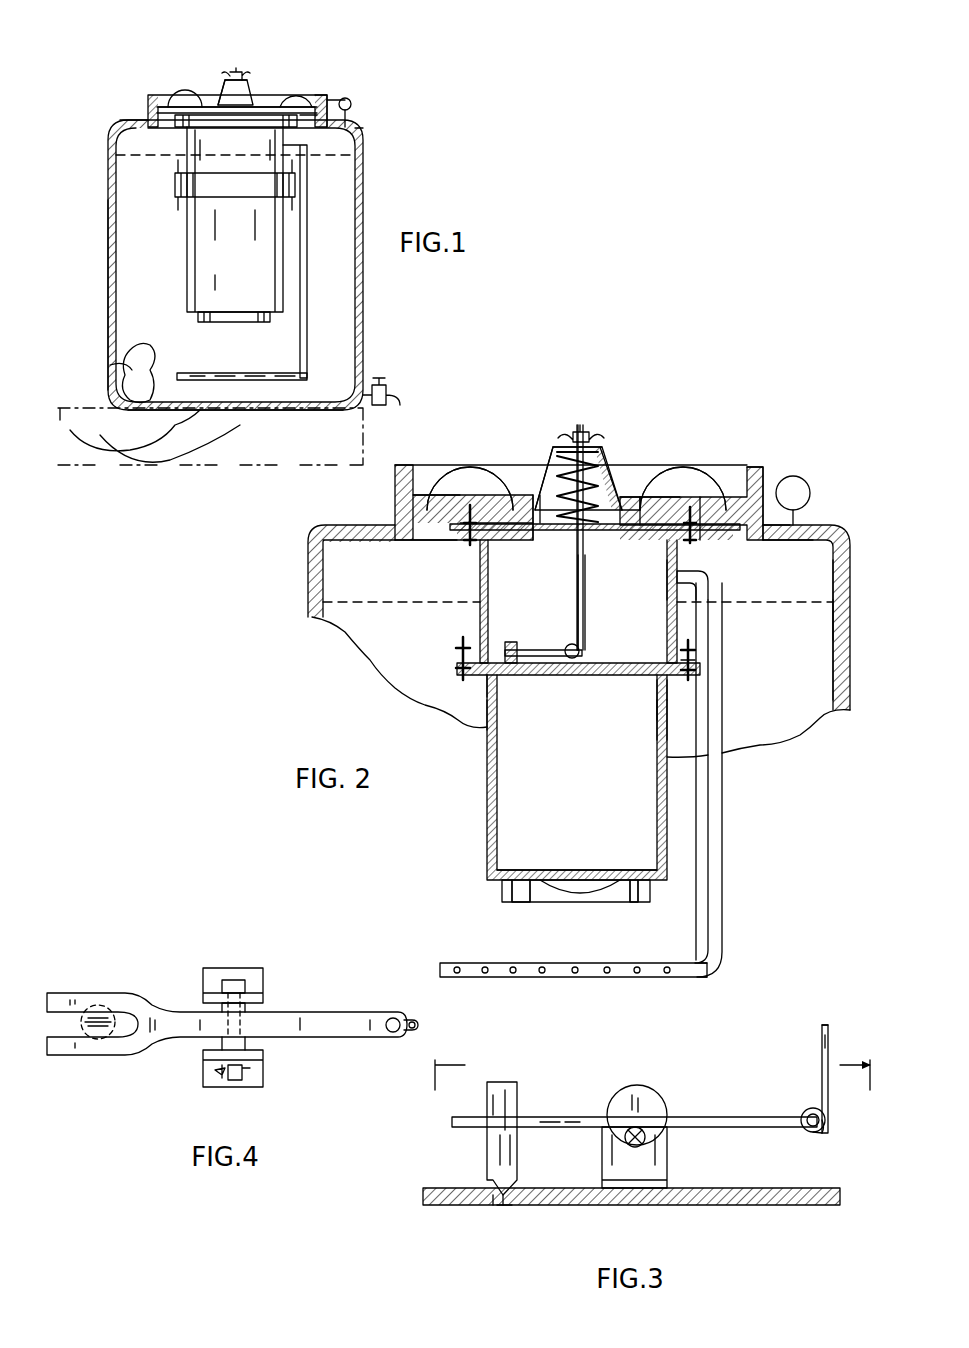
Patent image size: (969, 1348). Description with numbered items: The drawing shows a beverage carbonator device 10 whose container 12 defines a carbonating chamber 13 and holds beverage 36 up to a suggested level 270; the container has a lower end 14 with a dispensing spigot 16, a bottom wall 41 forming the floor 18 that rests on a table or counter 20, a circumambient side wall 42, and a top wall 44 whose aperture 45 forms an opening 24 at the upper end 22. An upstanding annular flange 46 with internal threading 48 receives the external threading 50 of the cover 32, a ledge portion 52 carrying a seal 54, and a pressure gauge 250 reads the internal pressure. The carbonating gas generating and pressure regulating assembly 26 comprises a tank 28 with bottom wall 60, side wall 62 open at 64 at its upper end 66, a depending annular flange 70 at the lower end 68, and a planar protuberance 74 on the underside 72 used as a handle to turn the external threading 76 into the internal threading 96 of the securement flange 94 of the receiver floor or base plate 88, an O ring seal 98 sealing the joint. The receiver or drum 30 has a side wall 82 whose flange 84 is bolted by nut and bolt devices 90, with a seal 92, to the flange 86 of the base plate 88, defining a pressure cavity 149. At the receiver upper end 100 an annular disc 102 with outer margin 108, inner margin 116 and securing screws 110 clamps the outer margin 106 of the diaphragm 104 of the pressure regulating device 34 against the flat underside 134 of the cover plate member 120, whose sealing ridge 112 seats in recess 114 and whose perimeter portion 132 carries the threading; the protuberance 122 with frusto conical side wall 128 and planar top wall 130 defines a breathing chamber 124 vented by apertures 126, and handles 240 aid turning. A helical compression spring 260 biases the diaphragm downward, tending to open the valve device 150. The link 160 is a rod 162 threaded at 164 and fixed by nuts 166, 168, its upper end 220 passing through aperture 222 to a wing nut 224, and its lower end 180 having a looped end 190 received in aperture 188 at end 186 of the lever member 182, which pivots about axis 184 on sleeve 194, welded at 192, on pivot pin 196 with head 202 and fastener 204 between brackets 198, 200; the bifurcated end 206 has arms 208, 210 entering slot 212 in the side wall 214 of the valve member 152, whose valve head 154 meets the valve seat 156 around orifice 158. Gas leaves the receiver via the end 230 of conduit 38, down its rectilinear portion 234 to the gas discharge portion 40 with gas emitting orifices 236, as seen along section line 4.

In FIG. 1, the beverage carbonator device 10 is at (397, 118).
In FIG. 1, the container 12 is at (368, 297).
In FIG. 2, the carbonating chamber 13 is at (832, 654).
In FIG. 1, the lower end 14 is at (135, 408).
In FIG. 1, the dispensing off-on control valve or spigot 16 is at (395, 385).
In FIG. 1, the flat bottom portion or floor 18 is at (215, 410).
In FIG. 1, the table or counter 20 is at (105, 408).
In FIG. 2, the upper end 22 is at (820, 545).
In FIG. 1, the opening 24 is at (168, 152).
In FIG. 2, the opening 24 is at (445, 552).
In FIG. 1, the carbonating gas generating and pressure regulating assembly 26 is at (170, 252).
In FIG. 2, the carbonating gas generating and pressure regulating assembly 26 is at (670, 468).
In FIG. 1, the receptacle or tank 28 is at (232, 300).
In FIG. 2, the receptacle or tank 28 is at (485, 830).
In FIG. 1, the carbonating gas receiver or drum 30 is at (262, 163).
In FIG. 2, the carbonating gas receiver or drum 30 is at (455, 640).
In FIG. 1, the container cover 32 is at (288, 82).
In FIG. 2, the container cover 32 is at (743, 494).
In FIG. 2, the pressure regulating device 34 is at (668, 456).
In FIG. 2, the beverage 36 is at (840, 608).
In FIG. 1, the conduit 38 is at (307, 240).
In FIG. 2, the conduit 38 is at (678, 690).
In FIG. 1, the gas discharge portion 40 is at (252, 382).
In FIG. 2, the gas discharge portion 40 is at (616, 978).
In FIG. 1, the bottom wall 41 is at (195, 410).
In FIG. 1, the side wall 42 is at (108, 240).
In FIG. 1, the top wall 44 is at (135, 118).
In FIG. 2, the aperture 45 is at (432, 540).
In FIG. 1, the annular flange 46 is at (332, 110).
In FIG. 2, the annular flange 46 is at (765, 500).
In FIG. 1, the internal threading 48 is at (322, 96).
In FIG. 2, the internal threading 48 is at (762, 480).
In FIG. 1, the external threading 50 is at (195, 95).
In FIG. 2, the external threading 50 is at (395, 510).
In FIG. 1, the ledge portion 52 is at (320, 128).
In FIG. 2, the ledge portion 52 is at (730, 540).
In FIG. 2, the seal 54 is at (790, 526).
In FIG. 2, the bottom wall 60 is at (630, 903).
In FIG. 2, the side wall 62 is at (487, 790).
In FIG. 2, the open end 64 is at (487, 745).
In FIG. 2, the upper end 66 is at (485, 705).
In FIG. 2, the lower end 68 is at (667, 862).
In FIG. 1, the annular flange 70 is at (272, 318).
In FIG. 2, the annular flange 70 is at (502, 892).
In FIG. 2, the underside 72 is at (522, 903).
In FIG. 2, the planar protuberance 74 is at (577, 895).
In FIG. 2, the external threading 76 is at (668, 715).
In FIG. 2, the side wall 82 is at (462, 614).
In FIG. 2, the flange 84 is at (457, 670).
In FIG. 2, the flange 86 is at (470, 662).
In FIG. 2, the receiver floor or base plate 88 is at (610, 672).
In FIG. 3, the receiver floor or base plate 88 is at (765, 1206).
In FIG. 2, the nut and bolt devices 90 is at (455, 645).
In FIG. 2, the seal 92 is at (700, 668).
In FIG. 2, the securement flange 94 is at (480, 672).
In FIG. 2, the internal threading 96 is at (668, 680).
In FIG. 2, the O ring seal 98 is at (655, 680).
In FIG. 2, the upper end 100 is at (488, 578).
In FIG. 2, the annular disc 102 is at (662, 545).
In FIG. 2, the diaphragm 104 is at (630, 530).
In FIG. 2, the outer margin 106 is at (703, 494).
In FIG. 2, the outer margin 108 is at (442, 494).
In FIG. 2, the securing bolts or screws 110 is at (527, 494).
In FIG. 2, the annular sealing ridge 112 is at (537, 500).
In FIG. 2, the annular recess 114 is at (705, 494).
In FIG. 2, the inner margin 116 is at (490, 540).
In FIG. 2, the plate member 120 is at (470, 495).
In FIG. 1, the protuberance 122 is at (254, 92).
In FIG. 2, the protuberance 122 is at (622, 480).
In FIG. 2, the breathing chamber 124 is at (660, 494).
In FIG. 2, the apertures 126 is at (548, 480).
In FIG. 1, the side wall 128 is at (220, 100).
In FIG. 2, the side wall 128 is at (630, 490).
In FIG. 2, the top wall 130 is at (608, 470).
In FIG. 2, the perimeter portion 132 is at (415, 465).
In FIG. 2, the underside 134 is at (715, 540).
In FIG. 2, the pressure cavity 149 is at (480, 598).
In FIG. 2, the valve device 150 is at (580, 682).
In FIG. 2, the valve member 152 is at (511, 642).
In FIG. 3, the valve member 152 is at (510, 1095).
In FIG. 3, the valve head 154 is at (497, 1205).
In FIG. 3, the valve seat 156 is at (510, 1205).
In FIG. 3, the orifice 158 is at (505, 1206).
In FIG. 2, the link 160 is at (592, 635).
In FIG. 3, the link 160 is at (818, 1074).
In FIG. 1, the rod 162 is at (232, 72).
In FIG. 2, the rod 162 is at (562, 672).
In FIG. 3, the rod 162 is at (830, 1043).
In FIG. 2, the threading 164 is at (568, 530).
In FIG. 2, the nut 166 is at (584, 548).
In FIG. 2, the nut 168 is at (548, 490).
In FIG. 3, the lower end 180 is at (830, 1105).
In FIG. 3, the lever member 182 is at (695, 1117).
In FIG. 3, the axis 184 is at (645, 1140).
In FIG. 2, the end 186 is at (543, 653).
In FIG. 3, the end 186 is at (785, 1128).
In FIG. 4, the end 186 is at (372, 1038).
In FIG. 4, the aperture 188 is at (393, 1018).
In FIG. 3, the looped end 190 is at (818, 1132).
In FIG. 3, the weld or braze 192 is at (622, 1112).
In FIG. 3, the sleeve 194 is at (665, 1128).
In FIG. 4, the sleeve 194 is at (265, 1006).
In FIG. 3, the pivot pin 196 is at (635, 1148).
In FIG. 4, the pivot pin 196 is at (240, 1082).
In FIG. 3, the bracket 198 is at (645, 1090).
In FIG. 4, the bracket 198 is at (263, 995).
In FIG. 4, the bracket 200 is at (265, 1075).
In FIG. 4, the head 202 is at (235, 980).
In FIG. 4, the fastener 204 is at (220, 1078).
In FIG. 4, the end 206 is at (168, 1030).
In FIG. 4, the arm 208 is at (80, 1000).
In FIG. 4, the arm 210 is at (62, 1045).
In FIG. 4, the slot 212 is at (115, 1000).
In FIG. 3, the side wall 214 is at (490, 1150).
In FIG. 2, the upper end 220 is at (618, 490).
In FIG. 2, the aperture 222 is at (583, 440).
In FIG. 1, the wing nut 224 is at (244, 80).
In FIG. 2, the wing nut 224 is at (573, 447).
In FIG. 2, the end 230 is at (706, 572).
In FIG. 2, the rectilinear portion 234 is at (724, 820).
In FIG. 2, the gas emitting orifices 236 is at (540, 978).
In FIG. 2, the planar protuberances 240 is at (470, 470).
In FIG. 1, the pressure gauge 250 is at (352, 103).
In FIG. 2, the pressure gauge 250 is at (811, 495).
In FIG. 2, the helical compression spring 260 is at (642, 494).
In FIG. 1, the beverage level 270 is at (128, 155).
In FIG. 2, the beverage level 270 is at (322, 600).
In FIG. 3, the section line 4- 4 is at (652, 1061).